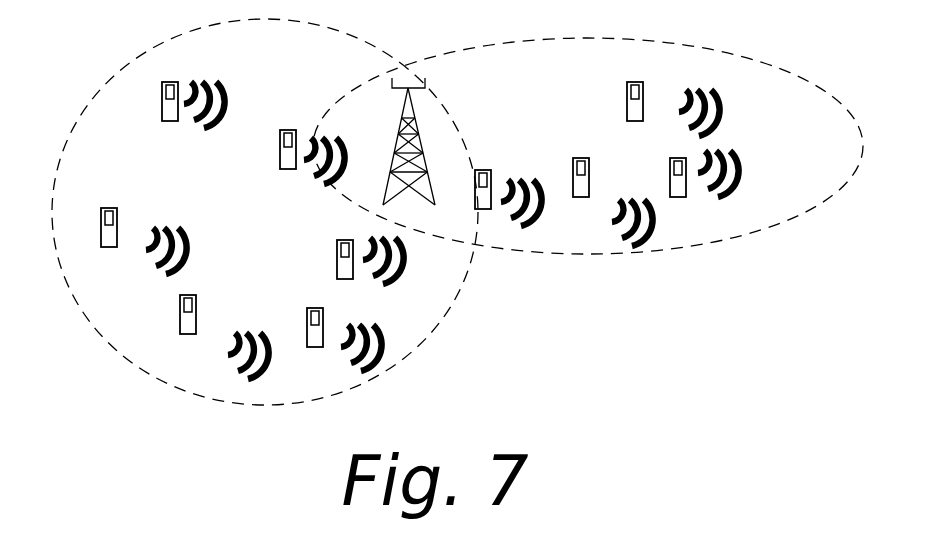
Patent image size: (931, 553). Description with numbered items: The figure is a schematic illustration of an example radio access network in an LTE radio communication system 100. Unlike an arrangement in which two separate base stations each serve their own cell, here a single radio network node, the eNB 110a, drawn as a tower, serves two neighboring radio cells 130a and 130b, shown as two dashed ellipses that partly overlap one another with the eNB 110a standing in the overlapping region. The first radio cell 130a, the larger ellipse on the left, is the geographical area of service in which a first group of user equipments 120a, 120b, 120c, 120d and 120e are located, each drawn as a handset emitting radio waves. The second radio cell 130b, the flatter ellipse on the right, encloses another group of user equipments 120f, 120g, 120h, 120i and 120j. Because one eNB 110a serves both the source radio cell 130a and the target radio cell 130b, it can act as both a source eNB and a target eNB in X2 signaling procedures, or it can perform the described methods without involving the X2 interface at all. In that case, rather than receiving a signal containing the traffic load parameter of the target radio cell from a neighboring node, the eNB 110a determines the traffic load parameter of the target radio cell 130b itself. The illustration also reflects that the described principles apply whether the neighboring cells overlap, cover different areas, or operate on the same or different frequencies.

The radio communication system 100 is at (437, 35).
The radio network node 110a is at (420, 138).
The user equipment 120a is at (130, 241).
The user equipment 120b is at (190, 115).
The user equipment 120c is at (221, 337).
The user equipment 120d is at (340, 342).
The user equipment 120e is at (366, 273).
The user equipment 120f is at (506, 204).
The user equipment 120g is at (307, 165).
The user equipment 120h is at (609, 202).
The user equipment 120i is at (702, 189).
The user equipment 120j is at (671, 115).
The radio cell 130a is at (112, 154).
The radio cell 130b is at (599, 252).